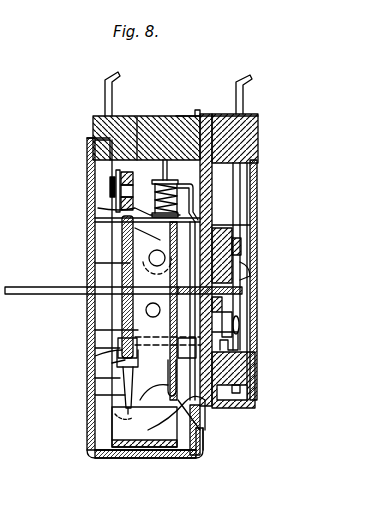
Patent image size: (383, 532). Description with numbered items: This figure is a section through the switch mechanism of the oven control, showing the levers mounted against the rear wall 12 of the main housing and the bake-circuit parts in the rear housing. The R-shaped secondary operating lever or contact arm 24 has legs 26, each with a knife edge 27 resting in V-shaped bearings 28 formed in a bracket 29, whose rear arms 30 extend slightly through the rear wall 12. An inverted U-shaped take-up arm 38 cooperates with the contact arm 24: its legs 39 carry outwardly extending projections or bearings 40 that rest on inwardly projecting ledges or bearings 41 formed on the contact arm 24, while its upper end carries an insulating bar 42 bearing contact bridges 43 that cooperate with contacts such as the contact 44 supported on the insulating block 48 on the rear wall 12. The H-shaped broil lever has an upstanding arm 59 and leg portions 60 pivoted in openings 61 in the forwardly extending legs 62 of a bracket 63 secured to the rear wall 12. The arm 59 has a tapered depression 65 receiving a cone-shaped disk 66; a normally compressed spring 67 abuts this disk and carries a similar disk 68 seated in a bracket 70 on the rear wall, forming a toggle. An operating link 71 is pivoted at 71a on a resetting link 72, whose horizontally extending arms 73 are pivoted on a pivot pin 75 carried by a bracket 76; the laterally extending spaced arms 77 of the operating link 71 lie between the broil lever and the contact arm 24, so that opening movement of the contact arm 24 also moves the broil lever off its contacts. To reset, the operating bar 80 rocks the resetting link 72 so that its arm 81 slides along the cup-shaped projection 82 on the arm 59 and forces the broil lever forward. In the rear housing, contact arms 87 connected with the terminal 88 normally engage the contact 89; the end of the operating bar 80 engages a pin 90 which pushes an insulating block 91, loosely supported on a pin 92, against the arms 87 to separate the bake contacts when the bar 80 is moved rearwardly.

The rear wall 12 is at (212, 173).
The secondary operating lever or contact arm 24 is at (95, 330).
The leg 26 is at (95, 378).
The knife edge 27 is at (95, 395).
The V-shaped bearing 28 is at (113, 418).
The bracket 29 is at (135, 447).
The arm 30 is at (204, 433).
The take-up arm 38 is at (95, 265).
The leg 39 is at (95, 348).
The projection or bearing 40 is at (95, 356).
The ledge or bearing 41 is at (110, 363).
The insulating bar 42 is at (90, 148).
The contact bridge 43 is at (116, 170).
The contact 44 is at (110, 186).
The insulating block 48 is at (104, 106).
The upstanding arm 59 is at (178, 330).
The leg portion 60 is at (176, 386).
The opening 61 is at (176, 413).
The leg 62 is at (105, 452).
The bracket 63 is at (180, 456).
The tapered depression 65 is at (110, 222).
The cone-shaped disk 66 is at (190, 200).
The spring 67 is at (157, 116).
The disk 68 is at (137, 117).
The bracket 70 is at (181, 115).
The operating link 71 is at (98, 208).
The pivot 71a is at (135, 248).
The resetting link 72 is at (122, 272).
The arm 73 is at (250, 362).
The pivot pin 75 is at (228, 408).
The bracket 76 is at (122, 308).
The arm 77 is at (122, 242).
The operating bar 80 is at (52, 292).
The arm 81 is at (215, 226).
The cup-shaped projection 82 is at (240, 258).
The contact arm 87 is at (245, 276).
The terminal 88 is at (243, 100).
The contact 89 is at (240, 346).
The pin 90 is at (232, 318).
The insulating block 91 is at (245, 292).
The pin 92 is at (247, 244).